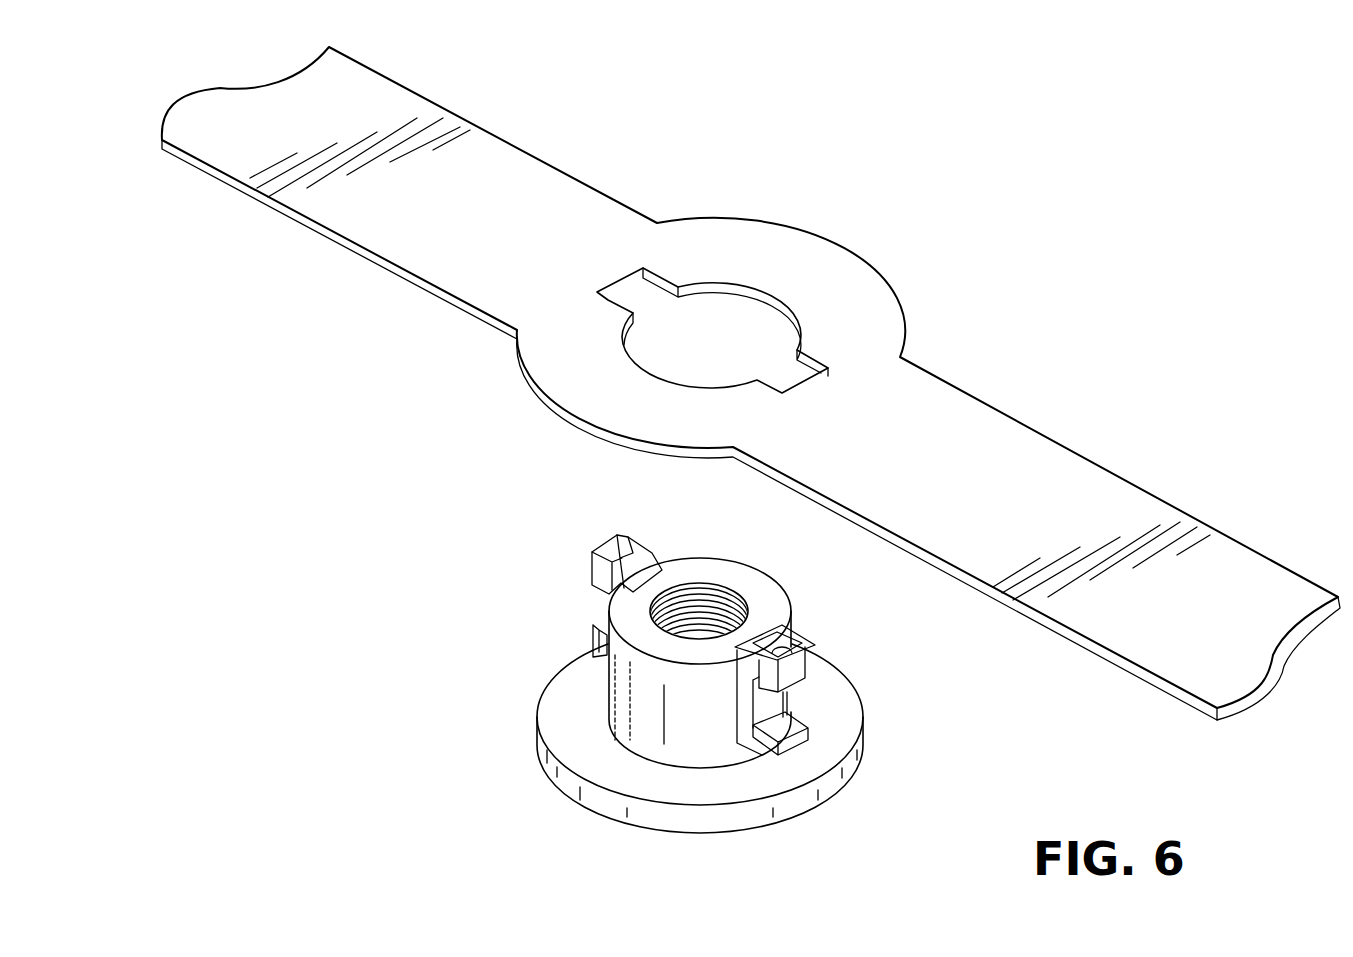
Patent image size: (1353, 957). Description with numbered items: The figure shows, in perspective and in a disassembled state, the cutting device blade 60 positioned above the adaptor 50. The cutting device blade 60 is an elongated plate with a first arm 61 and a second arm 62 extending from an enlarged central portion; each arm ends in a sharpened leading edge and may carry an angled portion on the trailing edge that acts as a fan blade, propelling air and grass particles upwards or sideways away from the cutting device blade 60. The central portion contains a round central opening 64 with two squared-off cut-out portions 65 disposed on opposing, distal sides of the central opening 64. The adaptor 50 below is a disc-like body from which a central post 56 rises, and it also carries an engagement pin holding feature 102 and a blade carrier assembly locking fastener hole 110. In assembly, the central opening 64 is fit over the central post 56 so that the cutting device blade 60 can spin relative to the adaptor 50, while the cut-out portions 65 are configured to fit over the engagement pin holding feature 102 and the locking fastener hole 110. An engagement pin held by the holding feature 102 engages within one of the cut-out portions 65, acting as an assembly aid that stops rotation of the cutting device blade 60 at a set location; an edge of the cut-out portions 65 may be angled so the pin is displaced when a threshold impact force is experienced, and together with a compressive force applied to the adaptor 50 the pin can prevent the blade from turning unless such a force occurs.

The adaptor 50 is at (787, 804).
The central post 56 is at (623, 710).
The cutting device blade 60 is at (530, 181).
The first arm 61 is at (253, 145).
The second arm 62 is at (1053, 478).
The central opening 64 is at (777, 304).
The cut-out portions 65 is at (663, 281).
The engagement pin holding feature 102 is at (592, 568).
The blade carrier assembly locking fastener hole 110 is at (786, 645).